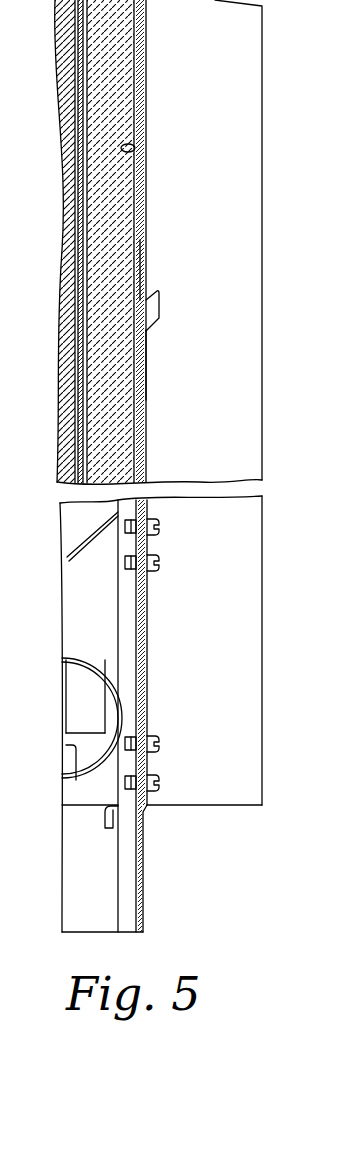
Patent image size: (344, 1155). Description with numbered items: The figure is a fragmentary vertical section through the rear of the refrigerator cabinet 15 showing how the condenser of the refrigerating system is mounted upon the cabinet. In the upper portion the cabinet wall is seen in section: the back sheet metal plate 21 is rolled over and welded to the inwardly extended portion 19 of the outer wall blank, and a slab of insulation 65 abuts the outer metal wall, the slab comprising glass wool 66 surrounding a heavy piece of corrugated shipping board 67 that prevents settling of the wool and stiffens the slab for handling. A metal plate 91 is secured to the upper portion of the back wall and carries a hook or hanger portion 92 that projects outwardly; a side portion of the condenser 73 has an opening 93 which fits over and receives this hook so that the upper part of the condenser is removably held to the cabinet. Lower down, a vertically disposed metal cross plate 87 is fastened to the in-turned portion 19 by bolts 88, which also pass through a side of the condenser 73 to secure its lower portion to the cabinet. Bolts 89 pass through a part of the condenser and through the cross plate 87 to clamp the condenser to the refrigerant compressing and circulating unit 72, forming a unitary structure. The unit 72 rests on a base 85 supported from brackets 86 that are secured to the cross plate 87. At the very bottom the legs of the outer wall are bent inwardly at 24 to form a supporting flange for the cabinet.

The refrigerator cabinet 15 is at (142, 200).
The inwardly extended portion 19 is at (141, 861).
The back sheet metal plate 21 is at (135, 147).
The supporting flange 24 is at (105, 930).
The slab of insulation 65 is at (112, 115).
The glass wool 66 is at (117, 78).
The corrugated shipping board 67 is at (83, 58).
The refrigerant compressing and circulating unit 72 is at (85, 712).
The condenser 73 is at (147, 610).
The base 85 is at (77, 805).
The bracket 86 is at (86, 551).
The metal cross plate 87 is at (146, 660).
The bolt 88 is at (158, 526).
The bolt 89 is at (158, 563).
The metal plate 91 is at (145, 270).
The hook or hanger portion 92 is at (150, 306).
The opening 93 is at (148, 338).